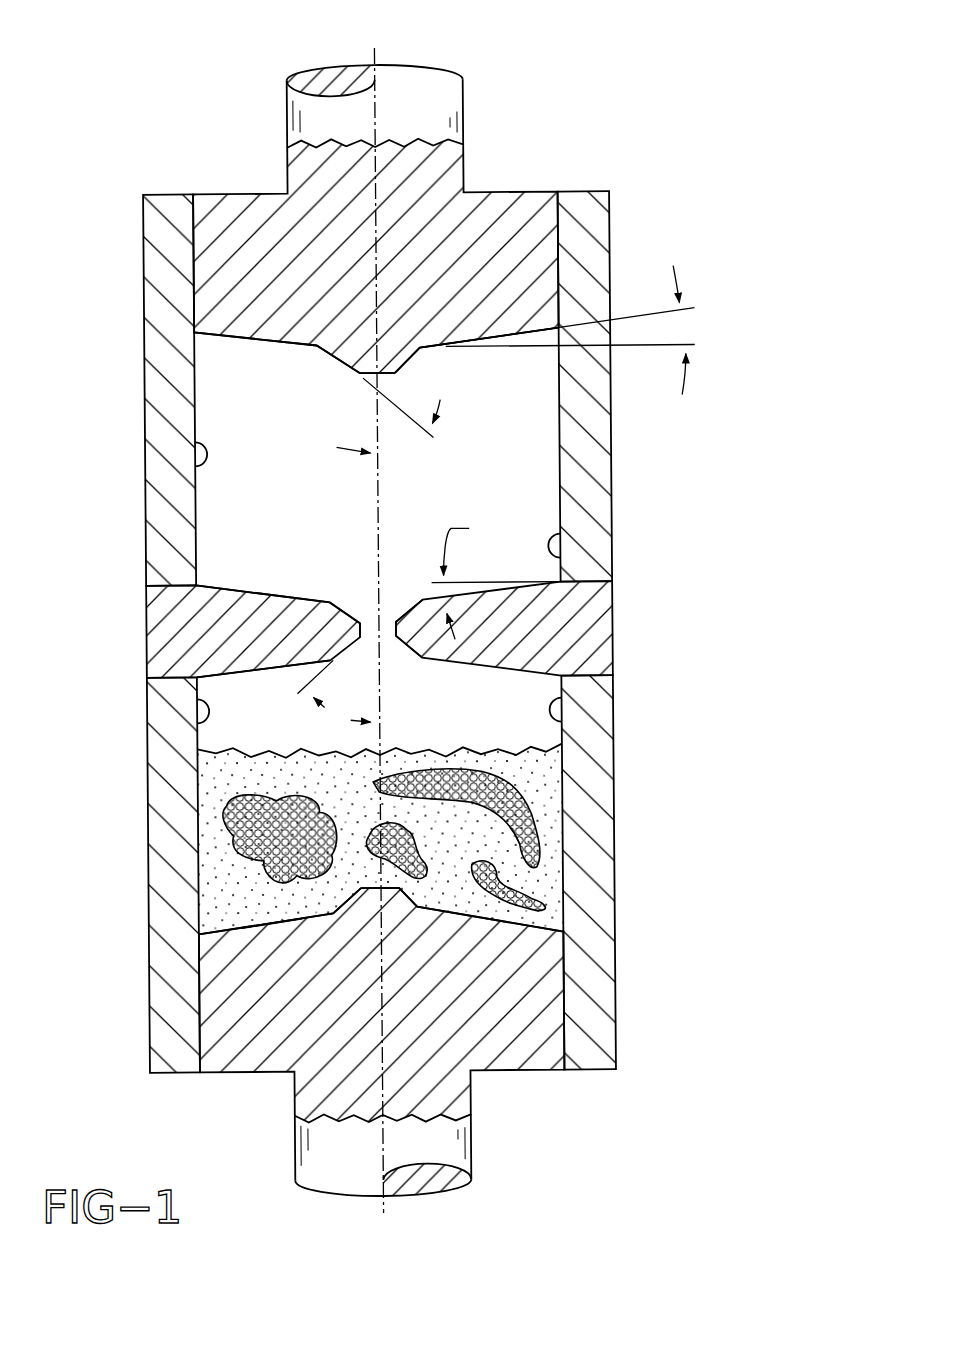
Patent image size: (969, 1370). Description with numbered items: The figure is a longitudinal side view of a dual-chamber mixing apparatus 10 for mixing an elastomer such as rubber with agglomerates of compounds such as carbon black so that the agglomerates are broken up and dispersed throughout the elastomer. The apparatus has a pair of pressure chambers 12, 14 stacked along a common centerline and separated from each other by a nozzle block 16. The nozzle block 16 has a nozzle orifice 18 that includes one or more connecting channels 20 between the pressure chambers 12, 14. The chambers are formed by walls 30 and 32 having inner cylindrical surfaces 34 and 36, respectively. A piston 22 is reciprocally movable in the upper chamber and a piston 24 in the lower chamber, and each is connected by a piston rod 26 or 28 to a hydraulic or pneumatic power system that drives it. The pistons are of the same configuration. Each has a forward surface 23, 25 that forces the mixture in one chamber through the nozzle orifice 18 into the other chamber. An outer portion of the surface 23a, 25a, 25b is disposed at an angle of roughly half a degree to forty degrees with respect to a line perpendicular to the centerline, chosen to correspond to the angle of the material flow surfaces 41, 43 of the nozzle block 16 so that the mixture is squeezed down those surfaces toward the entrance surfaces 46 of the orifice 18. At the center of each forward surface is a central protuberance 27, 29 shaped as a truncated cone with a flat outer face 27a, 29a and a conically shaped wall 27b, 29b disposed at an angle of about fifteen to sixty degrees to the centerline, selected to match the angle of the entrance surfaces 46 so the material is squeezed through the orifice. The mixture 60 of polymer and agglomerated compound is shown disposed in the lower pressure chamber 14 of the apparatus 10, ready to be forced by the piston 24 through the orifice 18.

The dual-chamber mixing apparatus 10 is at (136, 104).
The pressure chamber 12 is at (561, 546).
The pressure chamber 14 is at (561, 712).
The nozzle block 16 is at (567, 639).
The nozzle orifice 18 is at (366, 586).
The connecting channel 20 is at (348, 598).
The piston 22 is at (228, 215).
The forward surface 23 is at (517, 338).
The outer portion of the forward surface 23a is at (240, 340).
The piston 24 is at (518, 1058).
The forward surface 25 is at (213, 929).
The outer portion of the forward surface 25a is at (541, 924).
The outer portion of the forward surface 25b is at (242, 925).
The piston rod 26 is at (424, 122).
The central protuberance 27 is at (334, 350).
The flat outer face 27a is at (413, 360).
The conically shaped wall 27b is at (343, 368).
The piston rod 28 is at (437, 1149).
The central protuberance 29 is at (397, 903).
The flat outer face 29a is at (415, 905).
The conically shaped wall 29b is at (350, 895).
The wall 30 is at (582, 218).
The wall 32 is at (167, 987).
The inner cylindrical surface 34 is at (196, 440).
The inner cylindrical surface 36 is at (196, 700).
The material flow surface 41 is at (245, 585).
The material flow surface 43 is at (262, 677).
The entrance surface 46 is at (404, 600).
The mixture 60 is at (230, 823).